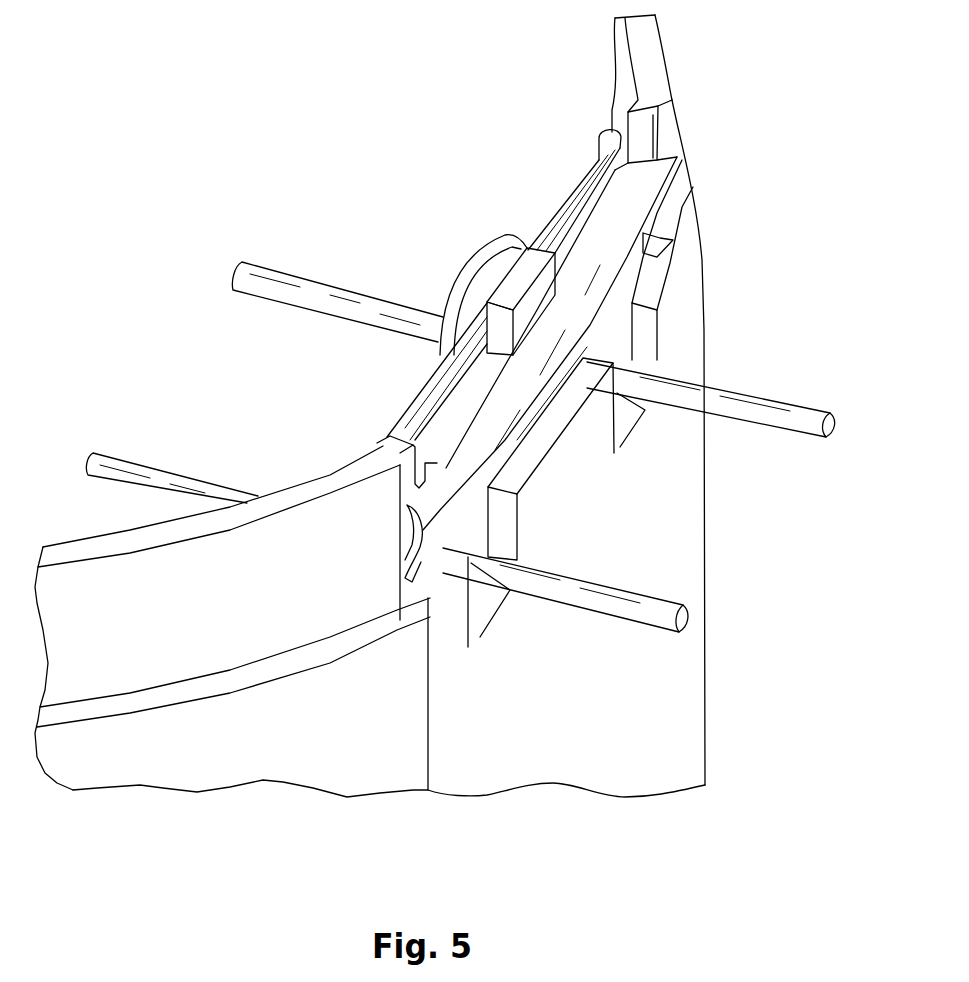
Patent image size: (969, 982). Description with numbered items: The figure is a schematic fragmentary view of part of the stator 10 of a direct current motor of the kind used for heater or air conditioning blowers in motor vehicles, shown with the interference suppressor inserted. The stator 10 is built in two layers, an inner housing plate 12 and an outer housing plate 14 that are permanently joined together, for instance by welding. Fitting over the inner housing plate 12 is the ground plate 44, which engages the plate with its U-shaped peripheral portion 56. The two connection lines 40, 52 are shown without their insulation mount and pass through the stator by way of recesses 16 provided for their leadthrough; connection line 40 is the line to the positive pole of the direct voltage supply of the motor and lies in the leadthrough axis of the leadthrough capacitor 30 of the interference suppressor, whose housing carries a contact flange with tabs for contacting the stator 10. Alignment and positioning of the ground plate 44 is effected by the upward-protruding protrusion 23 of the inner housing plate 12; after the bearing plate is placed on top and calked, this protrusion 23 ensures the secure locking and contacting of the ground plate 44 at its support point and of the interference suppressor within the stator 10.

The stator 10 is at (758, 722).
The inner housing plate 12 is at (648, 62).
The outer housing plate 14 is at (670, 263).
The recesses 16 is at (500, 537).
The upward-protruding protrusion 23 is at (523, 278).
The leadthrough capacitor 30 is at (444, 268).
The connection line 40 is at (757, 413).
The ground plate 44 is at (643, 210).
The connection line 52 is at (687, 618).
The U-shaped peripheral portion 56 is at (590, 330).